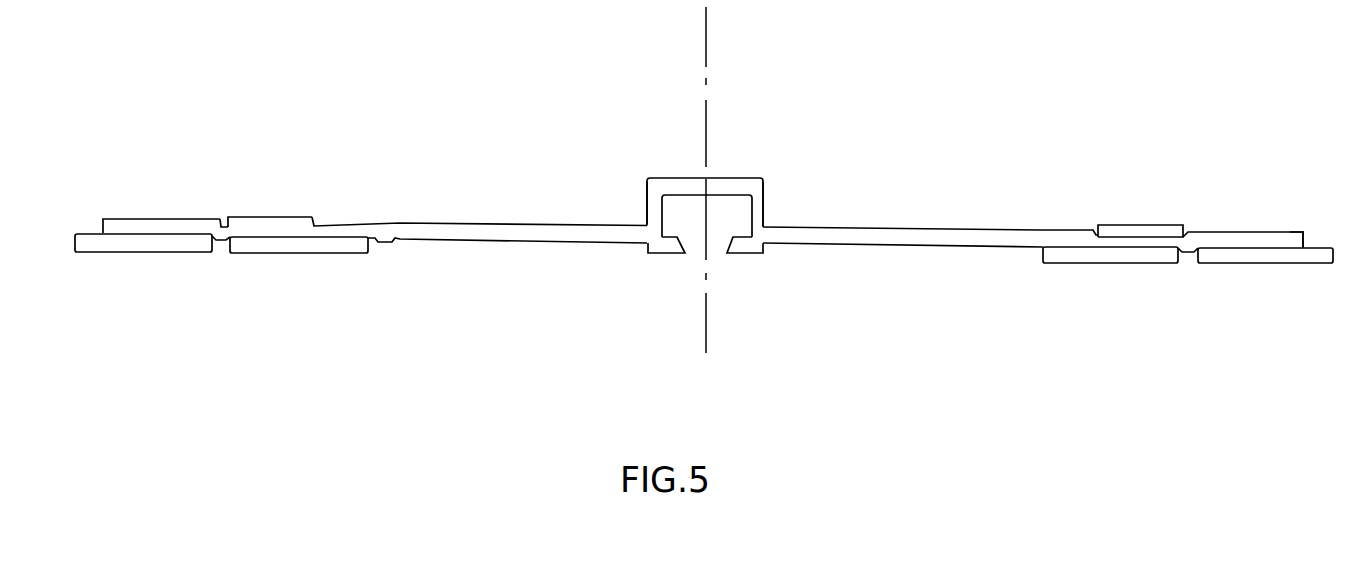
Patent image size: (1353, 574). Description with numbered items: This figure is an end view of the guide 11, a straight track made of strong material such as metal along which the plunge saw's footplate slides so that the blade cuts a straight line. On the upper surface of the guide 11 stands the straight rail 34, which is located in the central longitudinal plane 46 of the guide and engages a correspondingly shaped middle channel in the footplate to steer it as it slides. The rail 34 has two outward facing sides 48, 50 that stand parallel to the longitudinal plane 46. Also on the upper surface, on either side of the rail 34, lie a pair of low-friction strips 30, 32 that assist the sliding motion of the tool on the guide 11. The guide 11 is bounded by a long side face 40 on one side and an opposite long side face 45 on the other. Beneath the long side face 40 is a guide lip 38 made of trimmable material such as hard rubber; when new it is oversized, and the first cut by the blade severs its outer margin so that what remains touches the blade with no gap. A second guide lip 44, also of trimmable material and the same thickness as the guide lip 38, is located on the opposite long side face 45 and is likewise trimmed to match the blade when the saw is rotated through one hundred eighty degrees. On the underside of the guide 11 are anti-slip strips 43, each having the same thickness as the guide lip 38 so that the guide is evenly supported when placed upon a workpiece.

The guide 11 is at (492, 197).
The central longitudinal plane 46 is at (706, 50).
The rail 34 is at (743, 177).
The outward facing side 48 is at (646, 197).
The outward facing side 50 is at (764, 202).
The long side face 40 is at (103, 223).
The low-friction strip 30 is at (280, 222).
The low-friction strip 32 is at (1138, 228).
The opposite long side face 45 is at (1304, 233).
The guide lip 38 is at (132, 243).
The anti-slip strip 43 is at (330, 243).
The second guide lip 44 is at (1245, 257).